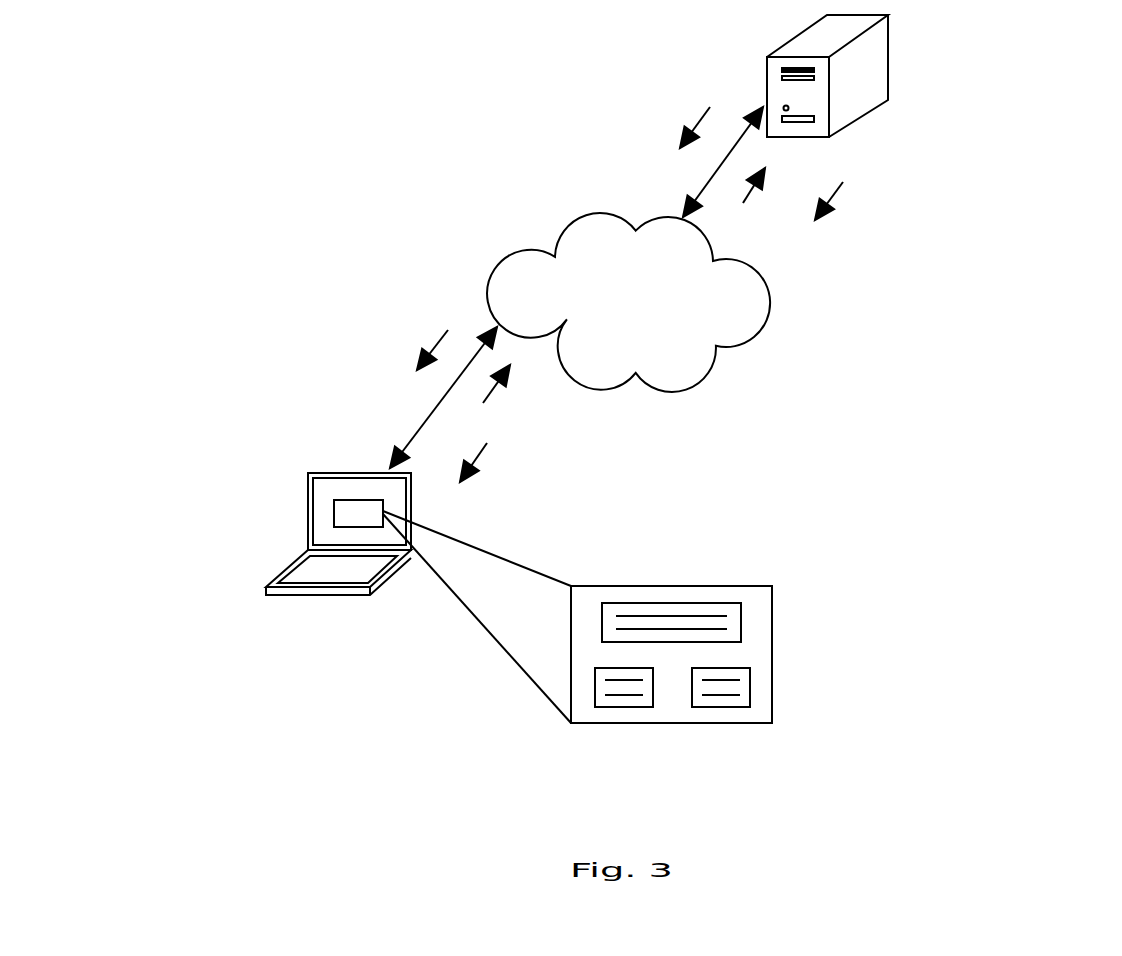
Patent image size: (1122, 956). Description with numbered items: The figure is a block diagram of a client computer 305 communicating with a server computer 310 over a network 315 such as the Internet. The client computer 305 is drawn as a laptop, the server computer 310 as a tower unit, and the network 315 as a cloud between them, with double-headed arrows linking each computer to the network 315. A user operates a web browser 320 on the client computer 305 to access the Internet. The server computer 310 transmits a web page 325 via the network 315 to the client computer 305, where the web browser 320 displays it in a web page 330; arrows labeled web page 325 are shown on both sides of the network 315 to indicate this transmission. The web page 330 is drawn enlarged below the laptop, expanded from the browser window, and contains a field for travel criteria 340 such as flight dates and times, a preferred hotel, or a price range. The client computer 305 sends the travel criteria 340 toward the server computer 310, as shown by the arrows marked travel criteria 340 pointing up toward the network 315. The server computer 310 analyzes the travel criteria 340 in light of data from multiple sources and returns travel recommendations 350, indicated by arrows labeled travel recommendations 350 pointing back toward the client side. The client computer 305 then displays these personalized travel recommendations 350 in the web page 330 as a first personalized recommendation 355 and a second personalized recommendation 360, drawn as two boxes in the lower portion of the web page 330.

The client computer 305 is at (289, 567).
The server computer 310 is at (888, 100).
The network 315 is at (652, 329).
The web browser 320 is at (345, 500).
The web page 325 is at (387, 320).
The web page 330 is at (772, 652).
The travel criteria 340 is at (743, 203).
The travel recommendations 350 is at (840, 188).
The first personalized recommendation 355 is at (610, 707).
The second personalized recommendation 360 is at (735, 707).